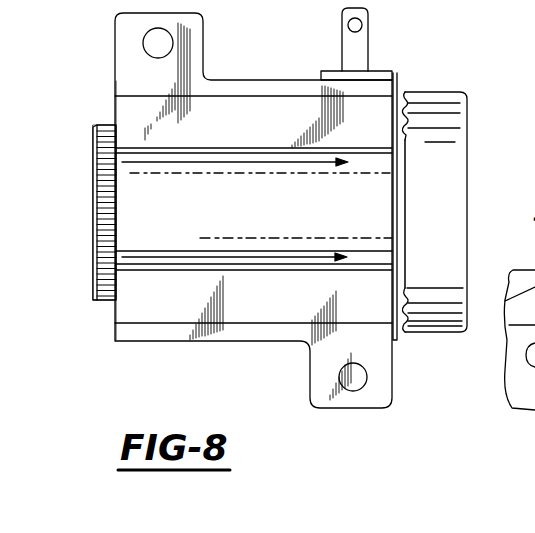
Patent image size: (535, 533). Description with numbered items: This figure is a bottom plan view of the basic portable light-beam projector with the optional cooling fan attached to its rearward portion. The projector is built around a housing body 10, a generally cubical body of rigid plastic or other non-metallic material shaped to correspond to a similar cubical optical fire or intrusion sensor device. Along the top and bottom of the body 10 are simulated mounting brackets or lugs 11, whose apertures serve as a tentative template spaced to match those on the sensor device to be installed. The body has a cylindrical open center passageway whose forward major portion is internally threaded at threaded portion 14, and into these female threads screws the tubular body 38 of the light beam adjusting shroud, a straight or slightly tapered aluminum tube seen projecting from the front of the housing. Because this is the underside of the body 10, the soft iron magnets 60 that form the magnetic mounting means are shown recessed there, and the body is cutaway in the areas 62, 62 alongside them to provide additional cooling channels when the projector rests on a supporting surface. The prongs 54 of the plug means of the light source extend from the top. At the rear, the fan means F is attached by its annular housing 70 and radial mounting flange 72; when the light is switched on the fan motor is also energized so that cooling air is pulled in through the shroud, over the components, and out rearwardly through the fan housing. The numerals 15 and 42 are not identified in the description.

The housing body 10 is at (273, 80).
The mounting brackets or lugs 11 is at (204, 30).
The internally threaded portion 14 is at (407, 294).
The mating member 15 is at (519, 358).
The tubular body 38 is at (99, 299).
The ring 42 is at (104, 212).
The prongs 54 is at (366, 38).
The soft iron magnets 60 is at (130, 105).
The cutaway areas 62 is at (133, 163).
The annular housing 70 is at (452, 330).
The radial mounting flange 72 is at (400, 341).
The fan means F is at (463, 90).